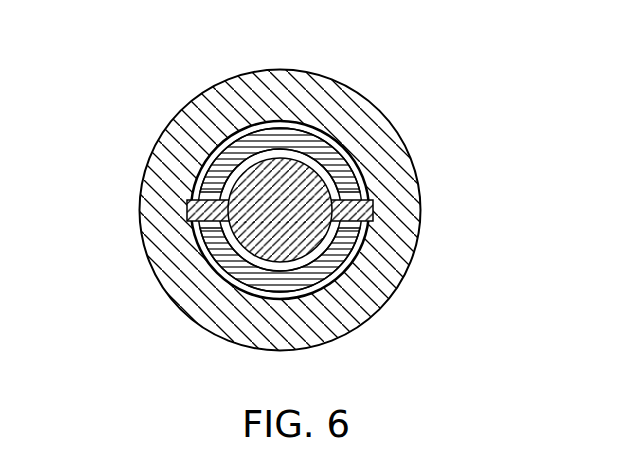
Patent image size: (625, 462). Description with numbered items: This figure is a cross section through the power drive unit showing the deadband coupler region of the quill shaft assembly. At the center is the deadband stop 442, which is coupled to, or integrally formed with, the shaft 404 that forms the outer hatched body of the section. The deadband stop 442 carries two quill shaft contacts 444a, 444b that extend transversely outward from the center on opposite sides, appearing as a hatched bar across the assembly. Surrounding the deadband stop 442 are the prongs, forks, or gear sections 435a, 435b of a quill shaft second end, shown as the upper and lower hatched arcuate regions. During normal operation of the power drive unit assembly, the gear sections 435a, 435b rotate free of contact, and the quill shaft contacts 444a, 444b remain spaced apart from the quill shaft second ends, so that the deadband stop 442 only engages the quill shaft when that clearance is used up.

The shaft 404 is at (272, 70).
The gear section 435a is at (352, 150).
The gear section 435b is at (358, 245).
The deadband stop 442 is at (301, 218).
The quill shaft contact 444a is at (187, 210).
The quill shaft contact 444b is at (373, 209).